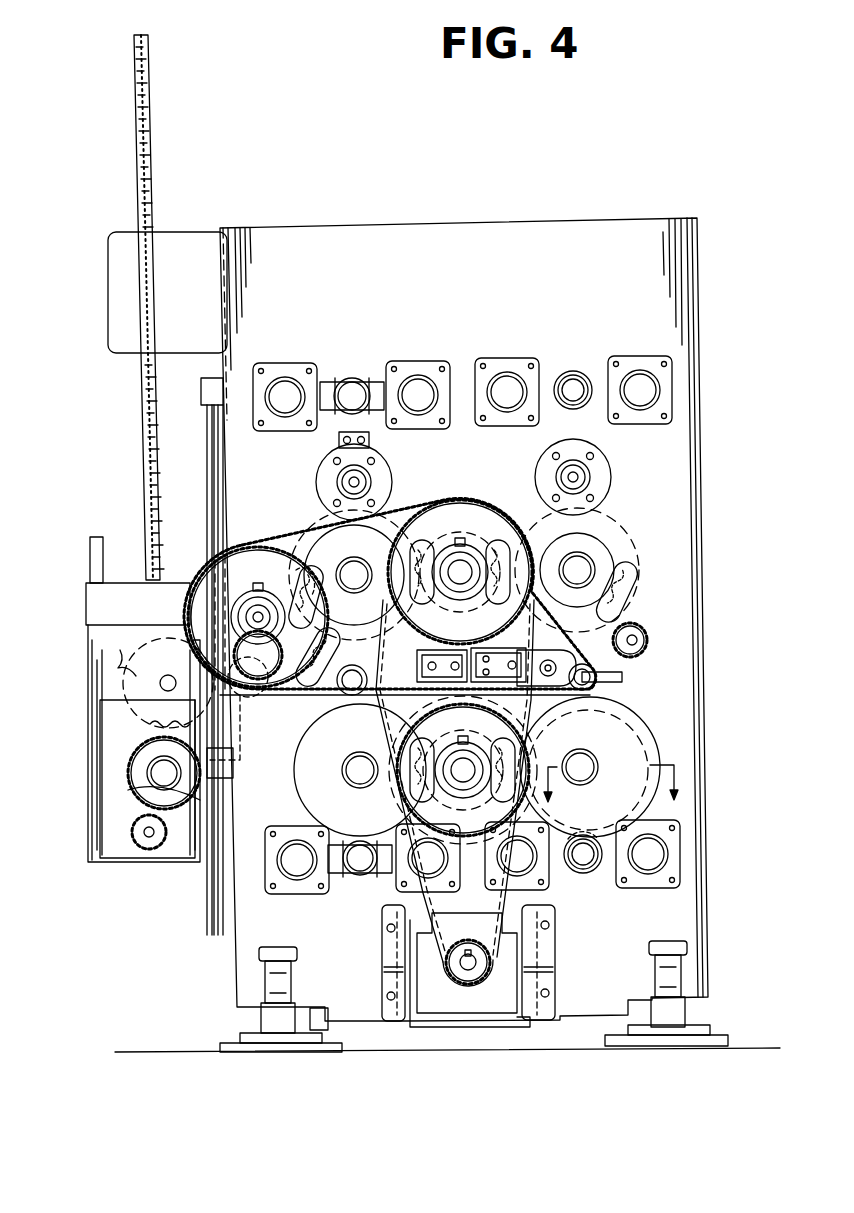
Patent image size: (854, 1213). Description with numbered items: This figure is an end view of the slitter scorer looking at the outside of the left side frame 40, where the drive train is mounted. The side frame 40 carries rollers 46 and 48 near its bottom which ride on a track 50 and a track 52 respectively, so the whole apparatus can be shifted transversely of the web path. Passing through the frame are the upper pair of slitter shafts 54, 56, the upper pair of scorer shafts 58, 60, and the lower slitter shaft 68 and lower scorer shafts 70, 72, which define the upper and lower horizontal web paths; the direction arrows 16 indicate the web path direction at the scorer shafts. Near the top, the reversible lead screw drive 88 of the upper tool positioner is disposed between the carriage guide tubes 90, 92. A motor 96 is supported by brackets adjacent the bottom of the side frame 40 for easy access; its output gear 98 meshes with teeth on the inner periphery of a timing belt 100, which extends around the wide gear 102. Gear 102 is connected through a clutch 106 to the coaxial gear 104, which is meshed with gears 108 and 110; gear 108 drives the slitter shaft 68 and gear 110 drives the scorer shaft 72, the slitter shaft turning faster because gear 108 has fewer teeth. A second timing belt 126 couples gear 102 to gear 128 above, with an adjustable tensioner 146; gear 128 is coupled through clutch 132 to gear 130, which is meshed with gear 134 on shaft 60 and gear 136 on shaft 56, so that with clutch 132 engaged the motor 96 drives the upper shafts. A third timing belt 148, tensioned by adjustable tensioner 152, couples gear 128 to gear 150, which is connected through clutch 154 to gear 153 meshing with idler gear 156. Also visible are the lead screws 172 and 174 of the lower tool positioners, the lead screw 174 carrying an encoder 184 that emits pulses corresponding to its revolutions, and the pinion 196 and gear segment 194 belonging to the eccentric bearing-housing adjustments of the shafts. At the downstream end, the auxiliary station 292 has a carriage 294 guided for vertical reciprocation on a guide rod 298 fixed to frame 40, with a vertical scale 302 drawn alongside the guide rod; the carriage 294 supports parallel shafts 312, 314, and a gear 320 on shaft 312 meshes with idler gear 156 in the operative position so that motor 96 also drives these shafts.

The direction arrows 16 is at (619, 796).
The left side frame 40 is at (460, 278).
The rollers 46 is at (665, 963).
The rollers 48 is at (280, 980).
The track 50 is at (665, 1020).
The track 52 is at (278, 1030).
The upper slitter shaft 54 is at (332, 470).
The upper slitter shaft 56 is at (338, 560).
The upper scorer shaft 58 is at (588, 470).
The upper scorer shaft 60 is at (584, 553).
The lower slitter shaft 68 is at (305, 793).
The lower scorer shaft 70 is at (637, 656).
The lower scorer shaft 72 is at (602, 756).
The reversible lead screw drive 88 is at (575, 378).
The carriage guide tube 90 is at (506, 378).
The carriage guide tube 92 is at (642, 375).
The motor 96 is at (510, 994).
The output gear 98 is at (455, 968).
The timing belt 100 is at (535, 890).
The gear 102 is at (482, 728).
The gear 104 is at (522, 745).
The clutch 106 is at (437, 773).
The gear 108 is at (338, 776).
The gear 110 is at (640, 734).
The second timing belt 126 is at (392, 522).
The gear 128 is at (465, 513).
The gear 130 is at (424, 548).
The clutch 132 is at (468, 568).
The gear 134 is at (632, 513).
The gear 136 is at (350, 558).
The adjustable tensioner 146 is at (372, 714).
The third timing belt 148 is at (298, 568).
The gear 150 is at (276, 572).
The adjustable tensioner 152 is at (596, 680).
The gear 153 is at (236, 643).
The clutch 154 is at (250, 612).
The idler gear 156 is at (207, 700).
The lead screw 172 is at (593, 868).
The lead screw 174 is at (352, 874).
The encoder 184 is at (372, 878).
The gear segment 194 is at (288, 712).
The pinion 196 is at (271, 552).
The auxiliary station 292 is at (82, 665).
The carriage 294 is at (96, 727).
The guide rod 298 is at (217, 913).
The scale 302 is at (150, 145).
The shaft 312 is at (160, 684).
The shaft 314 is at (145, 762).
The gear 320 is at (111, 651).